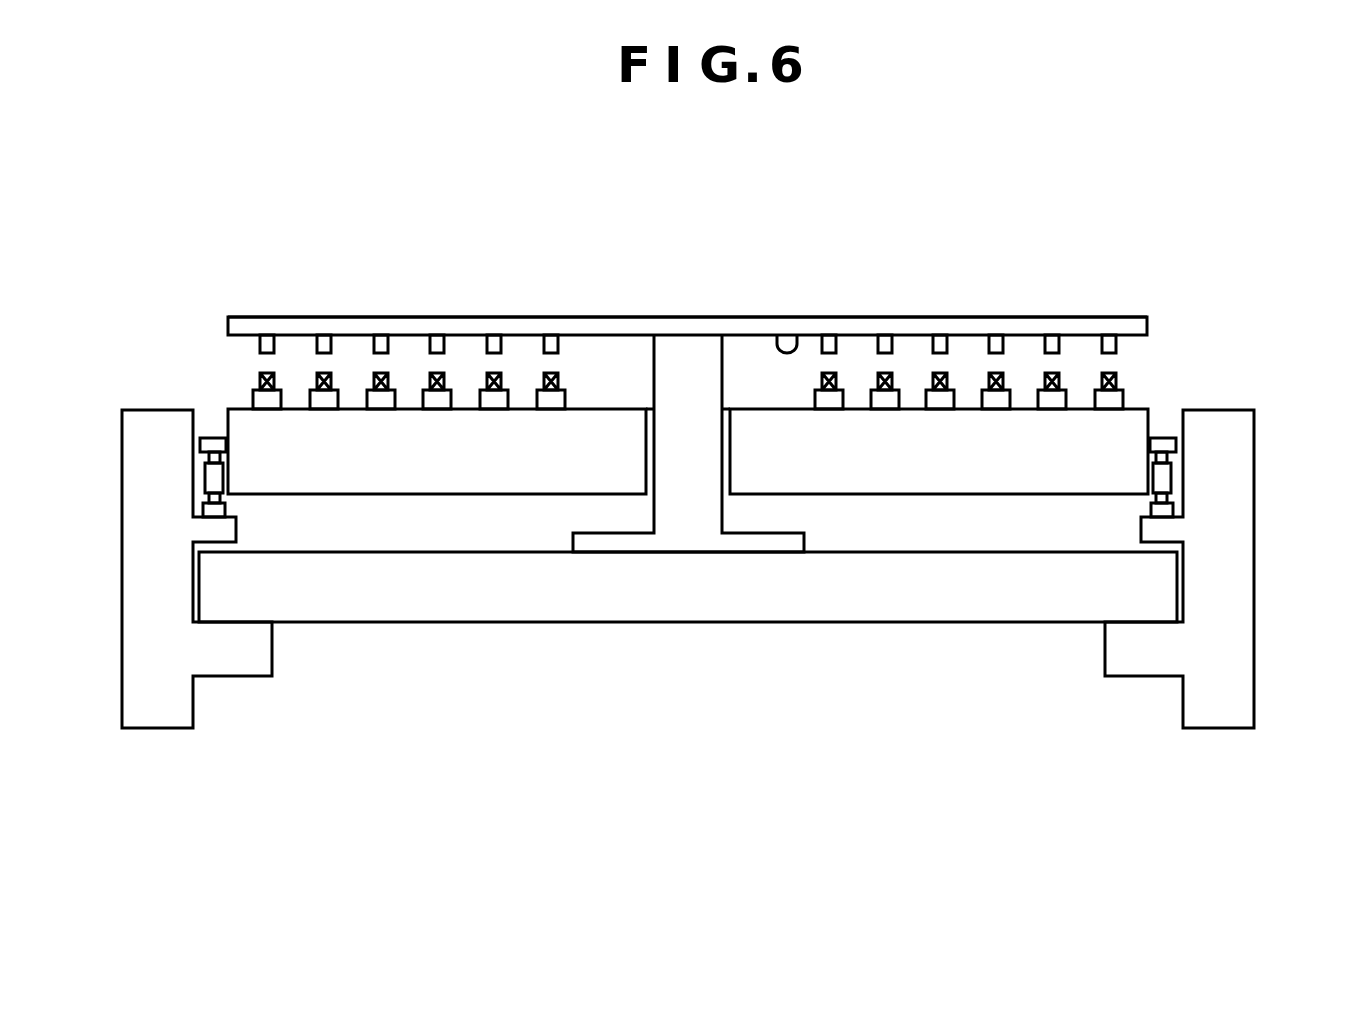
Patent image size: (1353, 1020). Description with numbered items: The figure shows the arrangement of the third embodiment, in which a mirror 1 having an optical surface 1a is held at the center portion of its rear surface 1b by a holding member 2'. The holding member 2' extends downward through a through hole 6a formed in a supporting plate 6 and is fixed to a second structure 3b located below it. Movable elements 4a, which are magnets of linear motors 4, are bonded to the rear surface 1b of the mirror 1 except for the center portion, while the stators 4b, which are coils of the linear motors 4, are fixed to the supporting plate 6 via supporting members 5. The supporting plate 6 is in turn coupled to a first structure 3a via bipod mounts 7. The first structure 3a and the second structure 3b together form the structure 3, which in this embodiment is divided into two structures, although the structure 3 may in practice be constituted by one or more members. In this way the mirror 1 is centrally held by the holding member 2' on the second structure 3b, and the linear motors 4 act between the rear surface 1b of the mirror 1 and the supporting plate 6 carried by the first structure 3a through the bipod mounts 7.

The mirror 1 is at (858, 326).
The optical surface 1a is at (920, 317).
The rear surface 1b is at (788, 350).
The holding member 2' is at (688, 392).
The structure 3 is at (1242, 237).
The first structure 3a is at (1206, 419).
The second structure 3b is at (1115, 570).
The linear motors 4 is at (332, 236).
The movable elements 4a is at (269, 337).
The stators 4b is at (278, 380).
The supporting members 5 is at (495, 400).
The supporting plate 6 is at (558, 478).
The through hole 6a is at (647, 445).
The bipod mounts 7 is at (1177, 445).